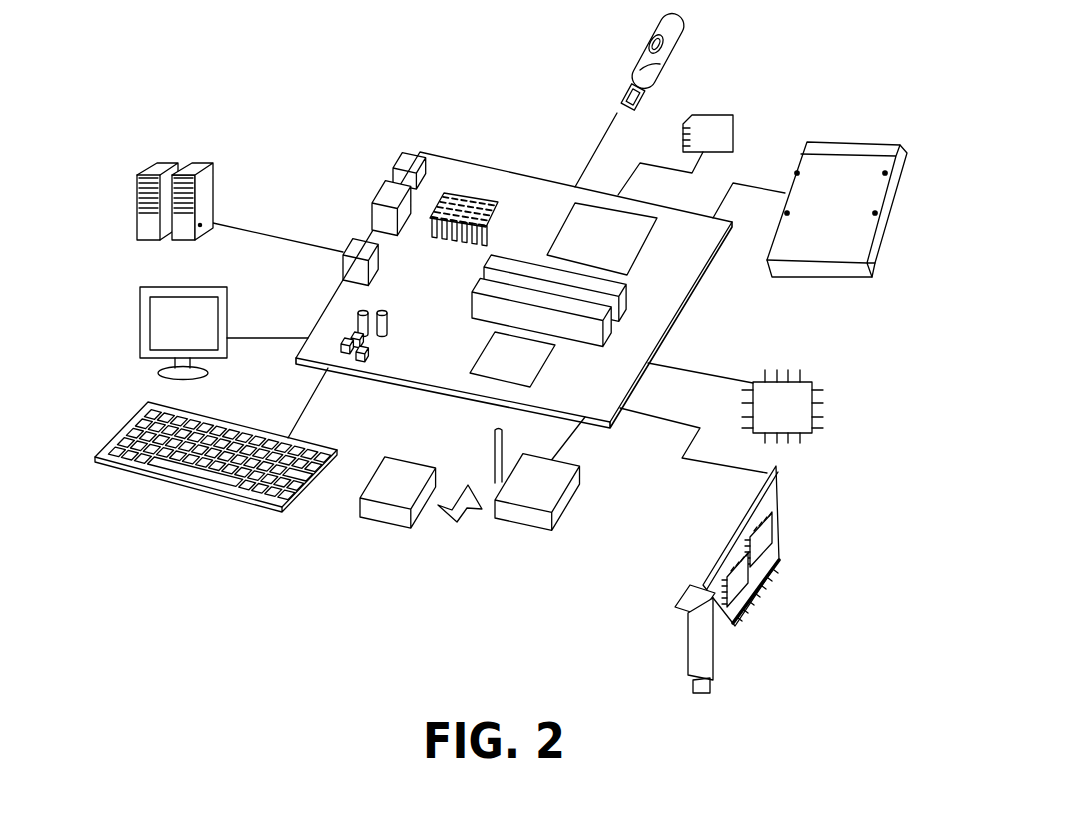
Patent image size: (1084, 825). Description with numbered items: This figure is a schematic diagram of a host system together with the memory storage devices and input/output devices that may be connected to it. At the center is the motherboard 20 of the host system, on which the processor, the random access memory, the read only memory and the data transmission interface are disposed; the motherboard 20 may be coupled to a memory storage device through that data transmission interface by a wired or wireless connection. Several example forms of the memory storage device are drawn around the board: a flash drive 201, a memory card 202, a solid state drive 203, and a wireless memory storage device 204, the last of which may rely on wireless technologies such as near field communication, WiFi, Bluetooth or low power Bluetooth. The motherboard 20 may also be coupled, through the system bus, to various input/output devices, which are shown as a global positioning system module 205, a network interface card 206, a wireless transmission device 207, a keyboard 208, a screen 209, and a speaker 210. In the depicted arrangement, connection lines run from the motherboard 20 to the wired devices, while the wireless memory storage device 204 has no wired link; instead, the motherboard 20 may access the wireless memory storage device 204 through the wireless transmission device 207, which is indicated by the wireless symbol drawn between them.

The motherboard 20 is at (517, 197).
The flash drive 201 is at (638, 50).
The memory card 202 is at (737, 122).
The solid state drive 203 is at (853, 142).
The wireless memory storage device 204 is at (373, 467).
The global positioning system module 205 is at (823, 405).
The network interface card 206 is at (780, 527).
The wireless transmission device 207 is at (573, 512).
The keyboard 208 is at (220, 494).
The screen 209 is at (135, 341).
The speaker 210 is at (135, 225).